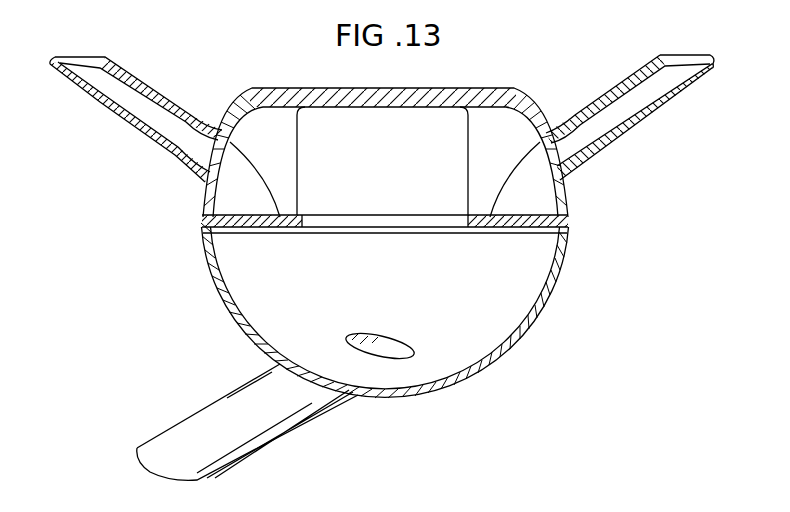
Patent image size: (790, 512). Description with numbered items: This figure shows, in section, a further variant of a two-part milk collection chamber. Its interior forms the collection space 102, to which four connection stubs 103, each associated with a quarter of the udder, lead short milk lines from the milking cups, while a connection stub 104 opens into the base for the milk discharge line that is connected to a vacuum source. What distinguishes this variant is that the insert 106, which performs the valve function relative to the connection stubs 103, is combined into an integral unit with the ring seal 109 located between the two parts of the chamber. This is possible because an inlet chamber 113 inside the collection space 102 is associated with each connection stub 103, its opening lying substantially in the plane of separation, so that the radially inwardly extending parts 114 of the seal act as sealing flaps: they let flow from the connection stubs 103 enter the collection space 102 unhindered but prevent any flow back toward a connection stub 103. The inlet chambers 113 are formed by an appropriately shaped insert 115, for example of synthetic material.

The collection space 102 is at (468, 325).
The connection stubs 103 is at (627, 105).
The connection stub 104 is at (183, 443).
The insert 106 is at (529, 234).
The ring seal 109 is at (573, 229).
The inlet chamber 113 is at (528, 186).
The radially inwardly extending parts 114 is at (484, 227).
The insert 115 is at (490, 135).